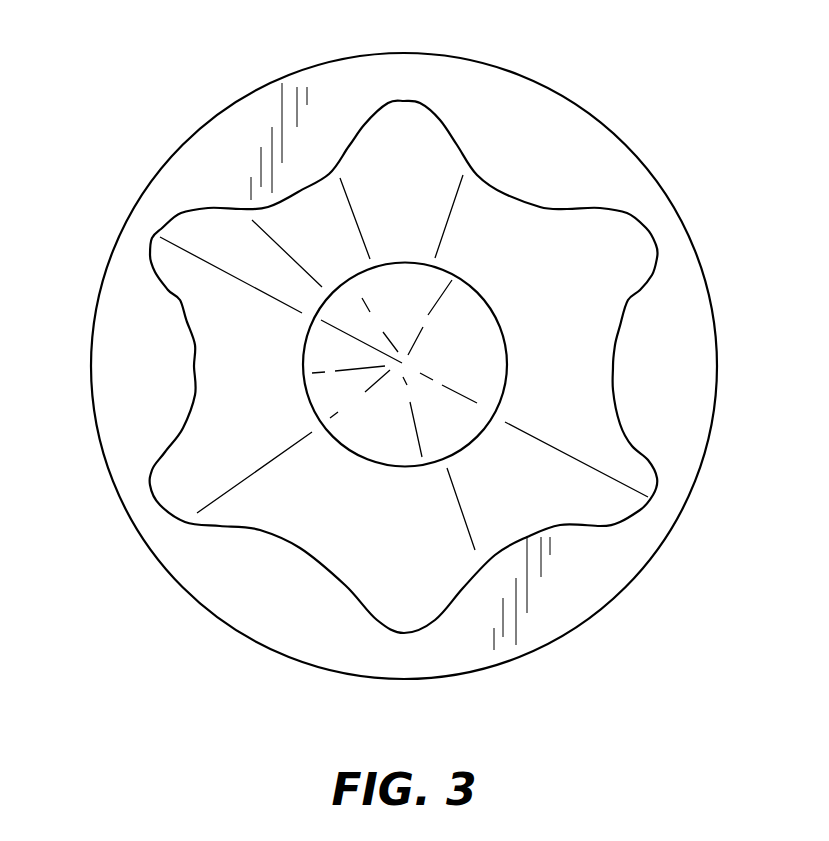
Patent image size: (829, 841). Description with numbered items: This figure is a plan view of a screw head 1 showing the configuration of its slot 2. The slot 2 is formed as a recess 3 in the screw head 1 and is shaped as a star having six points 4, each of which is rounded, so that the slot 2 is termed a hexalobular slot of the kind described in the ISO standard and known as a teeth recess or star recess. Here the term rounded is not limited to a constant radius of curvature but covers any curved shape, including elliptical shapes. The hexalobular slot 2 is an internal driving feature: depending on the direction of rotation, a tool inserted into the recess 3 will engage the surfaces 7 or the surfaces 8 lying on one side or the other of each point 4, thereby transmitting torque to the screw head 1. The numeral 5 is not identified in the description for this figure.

The screw head 1 is at (200, 153).
The slot 2 is at (377, 153).
The recess 3 is at (485, 298).
The points 4 is at (407, 634).
The flank 5 is at (377, 593).
The surfaces 7 is at (177, 432).
The surfaces 8 is at (162, 283).